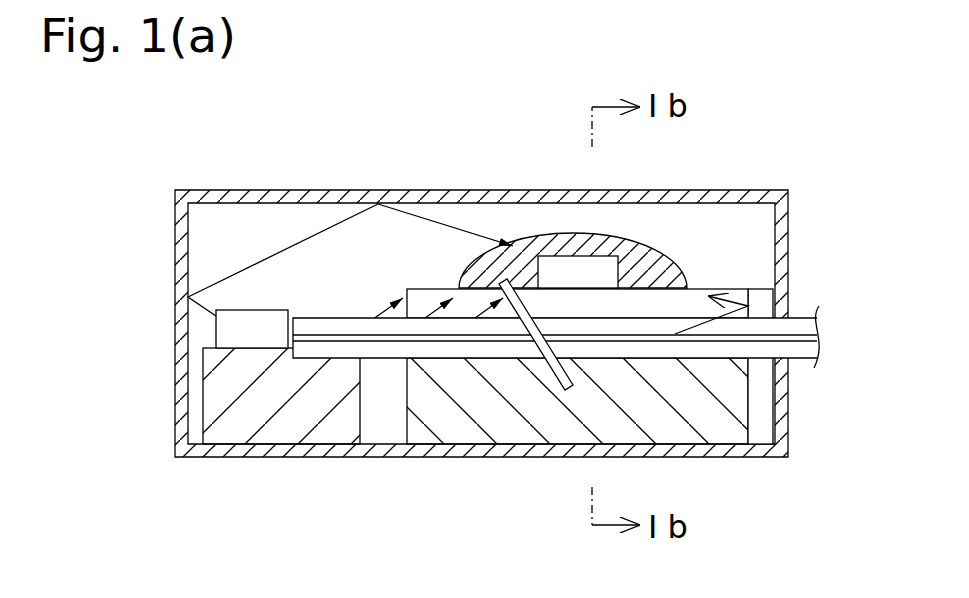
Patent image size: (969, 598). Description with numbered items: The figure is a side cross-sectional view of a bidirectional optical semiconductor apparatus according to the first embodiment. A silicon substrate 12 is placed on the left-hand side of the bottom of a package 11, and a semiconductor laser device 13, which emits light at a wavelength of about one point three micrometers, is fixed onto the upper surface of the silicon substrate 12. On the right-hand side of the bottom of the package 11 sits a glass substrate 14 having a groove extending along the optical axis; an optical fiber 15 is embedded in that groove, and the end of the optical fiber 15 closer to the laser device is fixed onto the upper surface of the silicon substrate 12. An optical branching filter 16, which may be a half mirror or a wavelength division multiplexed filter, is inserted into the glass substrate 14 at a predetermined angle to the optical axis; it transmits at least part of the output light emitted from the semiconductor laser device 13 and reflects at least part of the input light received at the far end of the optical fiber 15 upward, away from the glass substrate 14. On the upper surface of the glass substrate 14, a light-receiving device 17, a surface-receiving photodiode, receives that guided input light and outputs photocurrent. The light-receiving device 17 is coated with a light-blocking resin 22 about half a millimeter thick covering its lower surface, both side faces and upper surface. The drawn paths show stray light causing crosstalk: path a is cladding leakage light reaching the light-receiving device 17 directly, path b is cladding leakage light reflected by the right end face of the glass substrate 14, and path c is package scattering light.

The package 11 is at (788, 213).
The silicon substrate 12 is at (203, 387).
The semiconductor laser device 13 is at (247, 310).
The glass substrate 14 is at (748, 415).
The optical fiber 15 is at (800, 317).
The optical branching filter 16 is at (557, 380).
The light-receiving device 17 is at (561, 256).
The light-blocking resin 22 is at (643, 243).
The path a is at (382, 304).
The path b is at (737, 303).
The path c is at (305, 237).